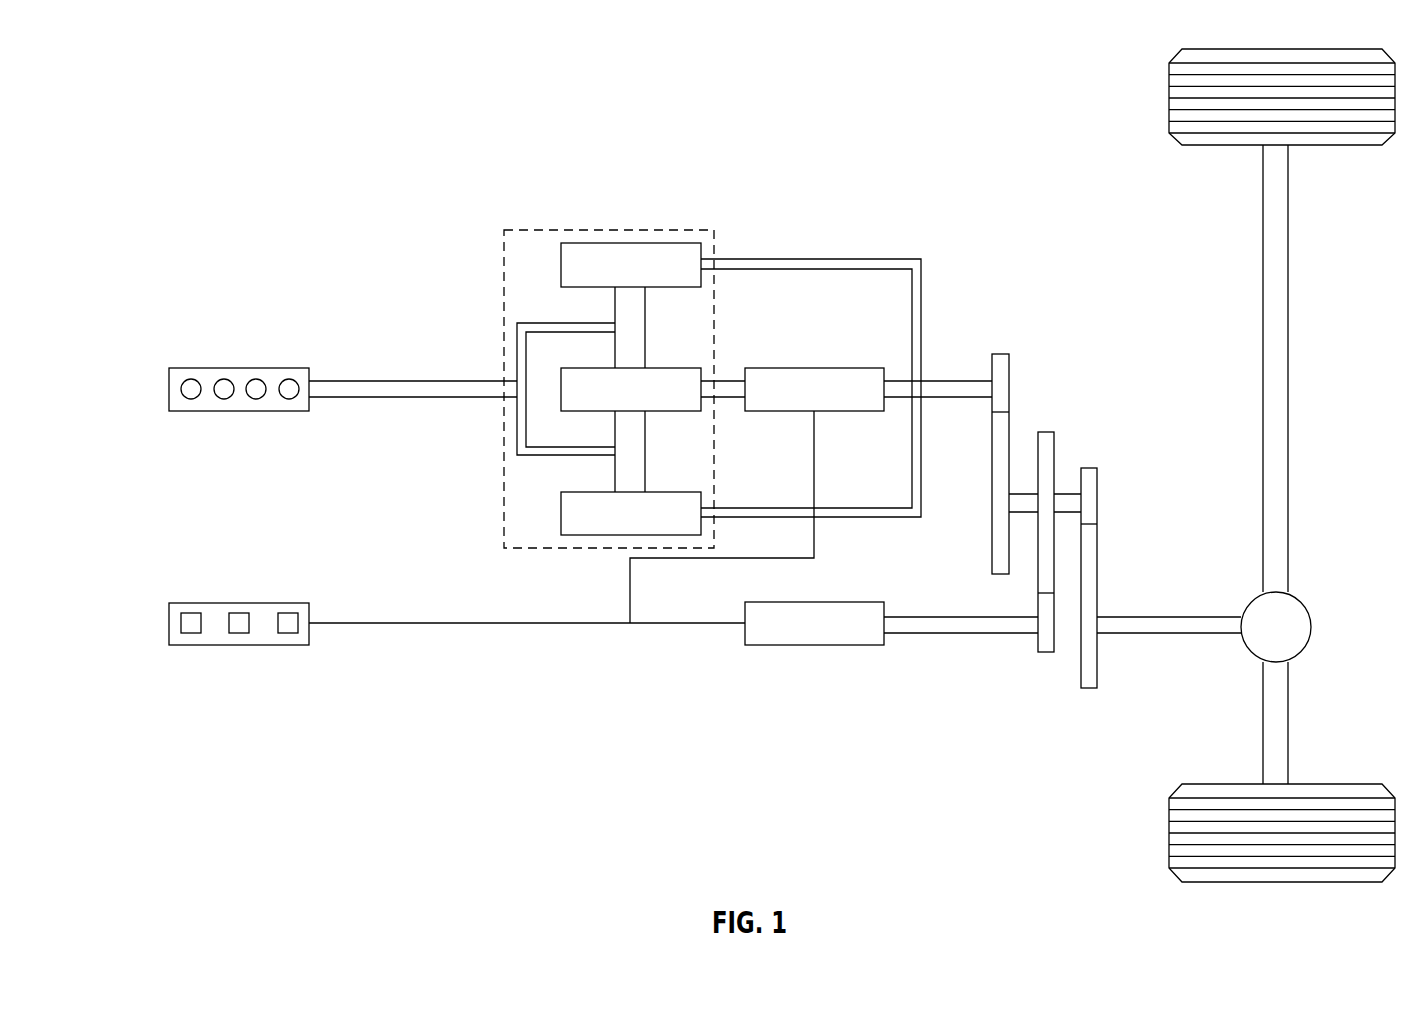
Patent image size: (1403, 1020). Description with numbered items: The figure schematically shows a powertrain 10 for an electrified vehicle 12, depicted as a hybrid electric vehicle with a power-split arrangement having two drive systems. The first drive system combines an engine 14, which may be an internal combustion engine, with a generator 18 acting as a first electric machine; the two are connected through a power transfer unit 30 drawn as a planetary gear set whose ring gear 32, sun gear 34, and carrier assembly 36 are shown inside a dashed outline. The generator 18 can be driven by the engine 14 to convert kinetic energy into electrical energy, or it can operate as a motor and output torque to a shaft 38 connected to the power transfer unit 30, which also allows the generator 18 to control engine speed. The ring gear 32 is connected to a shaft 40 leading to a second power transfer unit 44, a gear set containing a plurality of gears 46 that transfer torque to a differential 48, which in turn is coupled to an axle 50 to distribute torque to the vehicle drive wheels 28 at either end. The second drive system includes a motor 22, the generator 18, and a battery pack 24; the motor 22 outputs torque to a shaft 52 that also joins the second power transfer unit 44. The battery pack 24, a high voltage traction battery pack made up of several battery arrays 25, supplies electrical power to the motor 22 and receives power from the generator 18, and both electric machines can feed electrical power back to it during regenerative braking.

The powertrain 10 is at (210, 138).
The electrified vehicle 12 is at (835, 201).
The engine 14 is at (222, 412).
The generator 18 is at (832, 368).
The motor 22 is at (790, 602).
The battery pack 24 is at (169, 621).
The battery arrays 25 is at (191, 628).
The vehicle drive wheels 28 is at (1345, 49).
The power transfer unit 30 is at (556, 228).
The ring gear 32 is at (630, 243).
The sun gear 34 is at (604, 368).
The carrier assembly 36 is at (517, 422).
The shaft 38 is at (728, 381).
The shaft 40 is at (937, 399).
The second power transfer unit 44 is at (1121, 358).
The gears 46 is at (1002, 354).
The differential 48 is at (1311, 627).
The axle 50 is at (1290, 412).
The shaft 52 is at (905, 637).